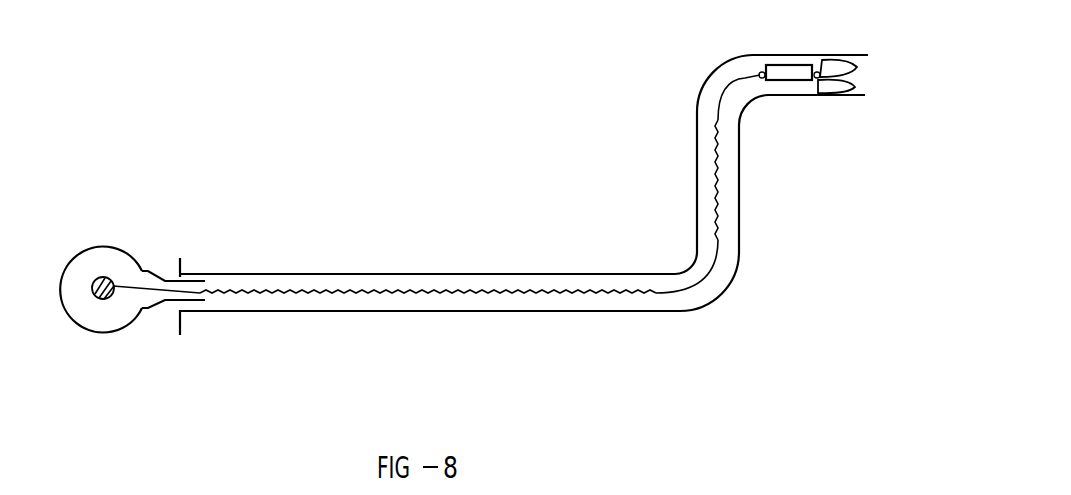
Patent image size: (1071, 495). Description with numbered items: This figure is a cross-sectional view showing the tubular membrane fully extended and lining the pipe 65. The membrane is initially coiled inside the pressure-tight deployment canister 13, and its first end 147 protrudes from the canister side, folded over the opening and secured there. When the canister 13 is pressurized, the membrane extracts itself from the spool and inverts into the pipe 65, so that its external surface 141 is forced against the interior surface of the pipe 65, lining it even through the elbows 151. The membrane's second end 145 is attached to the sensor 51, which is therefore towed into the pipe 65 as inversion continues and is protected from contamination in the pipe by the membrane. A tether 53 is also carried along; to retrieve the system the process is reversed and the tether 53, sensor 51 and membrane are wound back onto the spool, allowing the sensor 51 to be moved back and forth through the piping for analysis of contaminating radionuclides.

The deployment canister 13 is at (120, 339).
The first end 147 is at (195, 312).
The tether 53 is at (347, 297).
The external surface 141 is at (618, 312).
The elbows 151 is at (725, 288).
The pipe 65 is at (697, 165).
The sensor 51 is at (788, 70).
The second end 145 is at (850, 88).